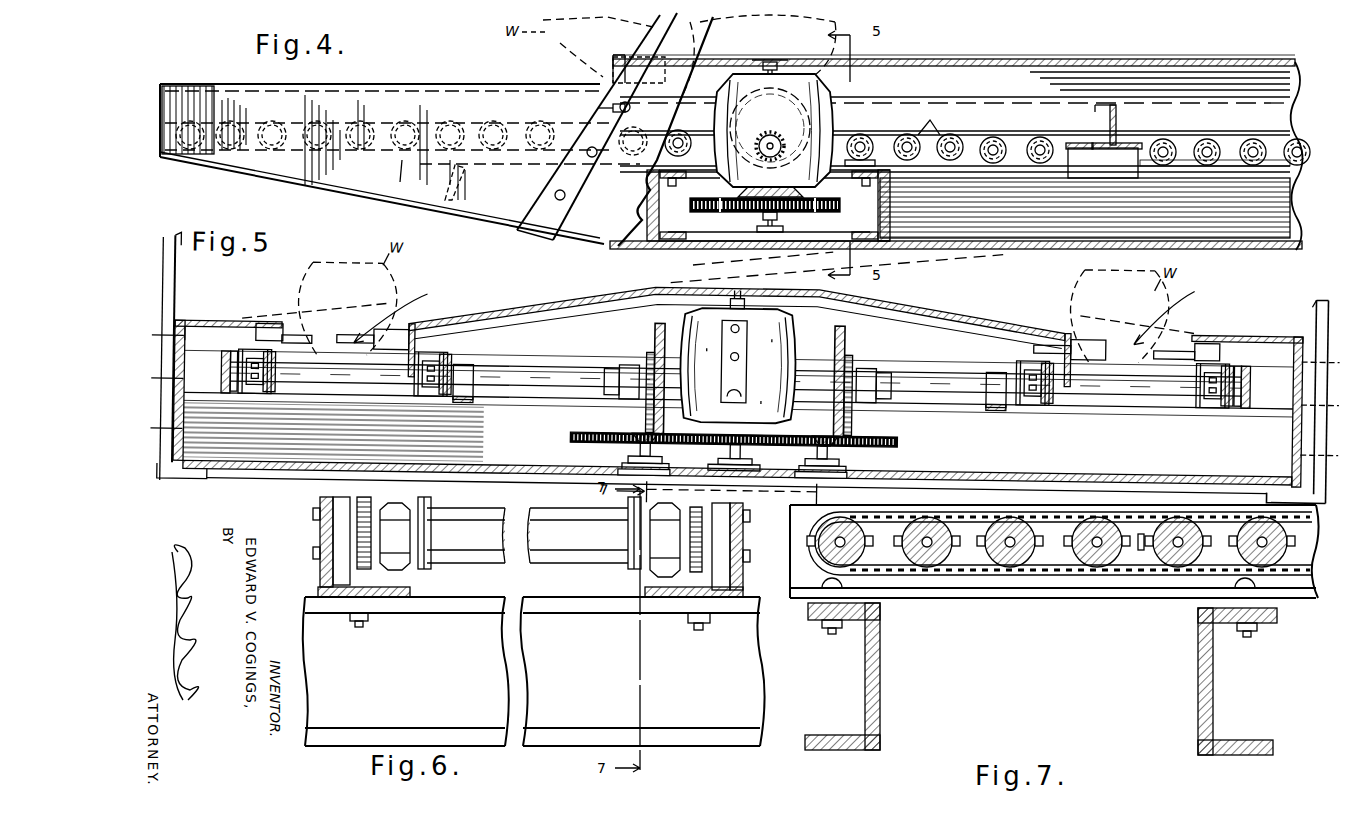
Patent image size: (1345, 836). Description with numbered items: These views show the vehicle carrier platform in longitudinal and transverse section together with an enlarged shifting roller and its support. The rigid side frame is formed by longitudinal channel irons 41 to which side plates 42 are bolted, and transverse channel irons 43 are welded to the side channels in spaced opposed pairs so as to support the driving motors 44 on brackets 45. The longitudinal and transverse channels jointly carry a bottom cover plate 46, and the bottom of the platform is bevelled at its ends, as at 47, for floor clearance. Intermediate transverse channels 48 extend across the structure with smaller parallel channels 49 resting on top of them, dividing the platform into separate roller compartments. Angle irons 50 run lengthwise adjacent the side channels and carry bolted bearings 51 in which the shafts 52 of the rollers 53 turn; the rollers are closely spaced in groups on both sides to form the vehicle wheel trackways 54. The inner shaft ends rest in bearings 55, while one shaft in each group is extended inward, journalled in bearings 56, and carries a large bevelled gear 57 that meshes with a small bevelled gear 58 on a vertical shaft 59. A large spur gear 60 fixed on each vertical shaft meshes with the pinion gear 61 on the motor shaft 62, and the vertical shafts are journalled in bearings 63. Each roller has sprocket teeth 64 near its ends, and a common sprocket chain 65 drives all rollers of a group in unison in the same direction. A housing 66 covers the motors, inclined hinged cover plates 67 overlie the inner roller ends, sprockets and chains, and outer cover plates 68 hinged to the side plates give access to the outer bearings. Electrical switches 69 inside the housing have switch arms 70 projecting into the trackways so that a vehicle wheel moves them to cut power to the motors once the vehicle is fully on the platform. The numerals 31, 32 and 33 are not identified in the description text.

In FIG. 4, the conveyor apparatus 31 is at (1116, 56).
In FIG. 4, the tapered frame beam 32 is at (438, 86).
In FIG. 4, the inclined guide plate 33 is at (560, 181).
In FIG. 5, the inclined guide plate 33 is at (172, 270).
In FIG. 4, the longitudinal channel irons 41 is at (1085, 208).
In FIG. 5, the longitudinal channel irons 41 is at (185, 330).
In FIG. 4, the side plates 42 is at (403, 185).
In FIG. 5, the side plates 42 is at (1292, 447).
In FIG. 4, the transverse channel irons 43 is at (640, 213).
In FIG. 5, the transverse channel irons 43 is at (738, 412).
In FIG. 6, the transverse channel irons 43 is at (534, 671).
In FIG. 7, the transverse channel irons 43 is at (880, 665).
In FIG. 4, the driving motors 44 is at (773, 123).
In FIG. 5, the driving motors 44 is at (778, 311).
In FIG. 4, the brackets 45 is at (860, 133).
In FIG. 5, the brackets 45 is at (742, 368).
In FIG. 4, the bottom cover plate 46 is at (1010, 250).
In FIG. 4, the bevel 47 is at (355, 190).
In FIG. 4, the intermediate transverse channels 48 is at (1088, 178).
In FIG. 4, the smaller parallel channels 49 is at (1092, 117).
In FIG. 5, the angle irons 50 is at (220, 366).
In FIG. 6, the angle irons 50 is at (320, 531).
In FIG. 5, the bearings 51 is at (232, 352).
In FIG. 6, the bearings 51 is at (341, 503).
In FIG. 4, the shafts 52 is at (962, 134).
In FIG. 5, the shafts 52 is at (545, 372).
In FIG. 6, the shafts 52 is at (368, 505).
In FIG. 5, the rollers 53 is at (352, 382).
In FIG. 6, the rollers 53 is at (484, 507).
In FIG. 7, the rollers 53 is at (1020, 575).
In FIG. 5, the vehicle wheel trackways 54 is at (779, 309).
In FIG. 5, the bearings 55 is at (470, 364).
In FIG. 6, the bearings 55 is at (722, 548).
In FIG. 4, the bearings 56 is at (1205, 165).
In FIG. 5, the bearings 56 is at (620, 362).
In FIG. 4, the bevelled gears 57 is at (795, 160).
In FIG. 5, the bevelled gears 57 is at (653, 330).
In FIG. 4, the small bevelled gears 58 is at (740, 192).
In FIG. 5, the small bevelled gears 58 is at (632, 428).
In FIG. 5, the vertically arranged shafts 59 is at (630, 450).
In FIG. 4, the spur gears 60 is at (757, 197).
In FIG. 5, the spur gears 60 is at (570, 430).
In FIG. 4, the pinion gear 61 is at (760, 216).
In FIG. 5, the pinion gear 61 is at (728, 430).
In FIG. 4, the motor shaft 62 is at (783, 226).
In FIG. 5, the motor shaft 62 is at (716, 452).
In FIG. 5, the bearings 63 is at (622, 462).
In FIG. 5, the sprocket teeth 64 is at (255, 394).
In FIG. 6, the sprocket teeth 64 is at (400, 504).
In FIG. 7, the sprocket teeth 64 is at (1030, 612).
In FIG. 4, the sprocket chain 65 is at (1010, 135).
In FIG. 5, the sprocket chain 65 is at (268, 393).
In FIG. 7, the sprocket chain 65 is at (970, 575).
In FIG. 4, the housing 66 is at (964, 60).
In FIG. 5, the housing 66 is at (770, 280).
In FIG. 5, the inclined hinged cover plates 67 is at (524, 302).
In FIG. 5, the outer cover plates 68 is at (246, 314).
In FIG. 4, the electrical switches 69 is at (585, 92).
In FIG. 5, the electrical switches 69 is at (265, 322).
In FIG. 4, the switch arms 70 is at (598, 108).
In FIG. 5, the switch arms 70 is at (296, 333).